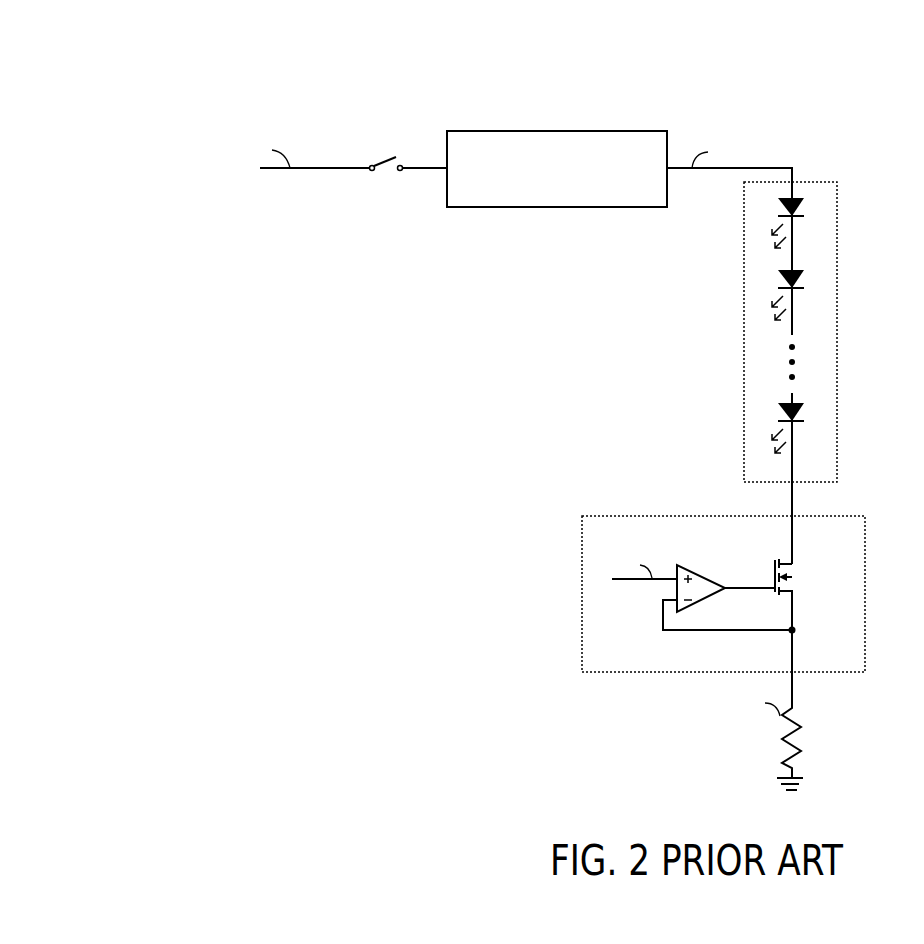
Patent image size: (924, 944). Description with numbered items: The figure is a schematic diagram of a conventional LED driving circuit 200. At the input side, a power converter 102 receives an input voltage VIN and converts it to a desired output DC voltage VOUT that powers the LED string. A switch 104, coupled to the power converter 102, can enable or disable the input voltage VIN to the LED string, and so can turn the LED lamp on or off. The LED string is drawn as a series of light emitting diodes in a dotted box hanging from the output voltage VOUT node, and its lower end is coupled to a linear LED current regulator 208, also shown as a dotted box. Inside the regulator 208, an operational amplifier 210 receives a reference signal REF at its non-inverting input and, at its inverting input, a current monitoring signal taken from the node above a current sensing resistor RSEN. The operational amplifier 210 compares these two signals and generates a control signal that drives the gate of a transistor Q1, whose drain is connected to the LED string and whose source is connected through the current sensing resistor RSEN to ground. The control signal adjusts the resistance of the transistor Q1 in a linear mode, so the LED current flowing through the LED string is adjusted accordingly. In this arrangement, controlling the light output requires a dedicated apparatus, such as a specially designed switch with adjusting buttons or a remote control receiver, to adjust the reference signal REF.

The LED driving circuit 200 is at (152, 85).
The power converter 102 is at (600, 131).
The switch 104 is at (393, 160).
The linear LED current regulator 208 is at (640, 516).
The operational amplifier 210 is at (705, 598).
The transistor Q1 is at (775, 572).
The current sensing resistor RSEN is at (755, 710).
The input voltage VIN is at (306, 153).
The output DC voltage VOUT is at (729, 237).
The reference signal REF is at (644, 561).